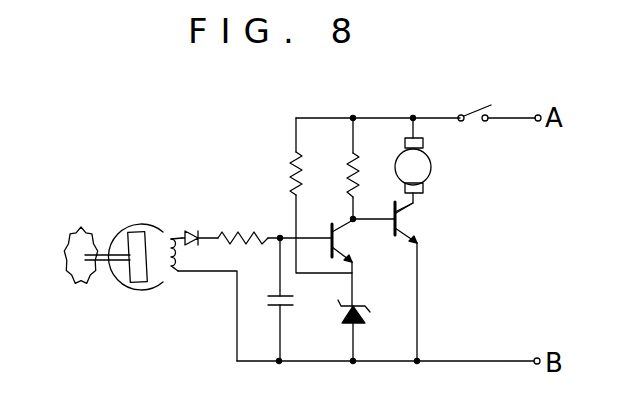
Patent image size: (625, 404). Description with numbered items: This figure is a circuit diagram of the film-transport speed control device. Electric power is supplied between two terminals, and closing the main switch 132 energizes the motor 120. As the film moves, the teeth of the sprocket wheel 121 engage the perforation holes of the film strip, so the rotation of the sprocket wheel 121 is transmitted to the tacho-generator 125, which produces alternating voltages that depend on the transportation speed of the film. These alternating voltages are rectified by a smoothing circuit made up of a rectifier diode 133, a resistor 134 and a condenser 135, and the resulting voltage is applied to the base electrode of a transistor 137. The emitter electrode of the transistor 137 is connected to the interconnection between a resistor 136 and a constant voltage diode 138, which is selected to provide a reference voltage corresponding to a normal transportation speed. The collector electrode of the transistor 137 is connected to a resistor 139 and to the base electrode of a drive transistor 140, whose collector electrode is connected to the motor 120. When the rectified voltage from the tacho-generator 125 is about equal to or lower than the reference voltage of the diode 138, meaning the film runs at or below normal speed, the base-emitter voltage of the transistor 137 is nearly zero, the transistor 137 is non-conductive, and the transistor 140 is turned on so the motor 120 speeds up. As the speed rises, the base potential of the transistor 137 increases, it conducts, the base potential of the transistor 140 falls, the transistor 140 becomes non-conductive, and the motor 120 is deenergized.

The motor 120 is at (431, 160).
The sprocket wheel 121 is at (73, 225).
The tacho-generator 125 is at (158, 286).
The main switch 132 is at (467, 107).
The rectifier diode 133 is at (193, 231).
The resistor 134 is at (244, 223).
The condenser 135 is at (348, 305).
The resistor 136 is at (313, 173).
The transistor 137 is at (357, 241).
The constant voltage diode 138 is at (365, 325).
The resistor 139 is at (369, 175).
The drive transistor 140 is at (425, 222).